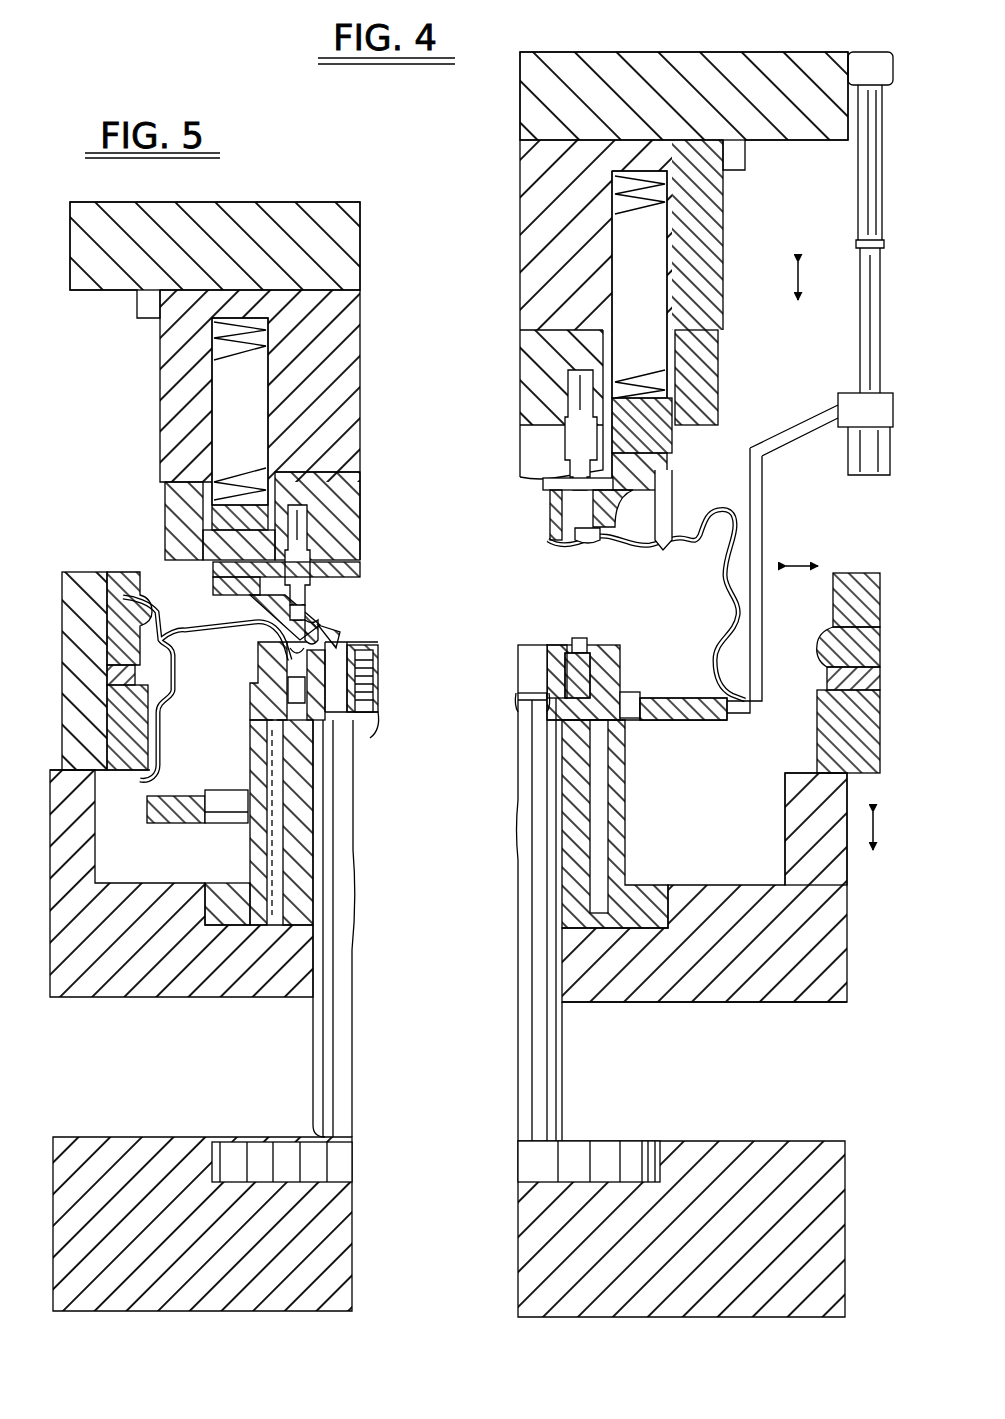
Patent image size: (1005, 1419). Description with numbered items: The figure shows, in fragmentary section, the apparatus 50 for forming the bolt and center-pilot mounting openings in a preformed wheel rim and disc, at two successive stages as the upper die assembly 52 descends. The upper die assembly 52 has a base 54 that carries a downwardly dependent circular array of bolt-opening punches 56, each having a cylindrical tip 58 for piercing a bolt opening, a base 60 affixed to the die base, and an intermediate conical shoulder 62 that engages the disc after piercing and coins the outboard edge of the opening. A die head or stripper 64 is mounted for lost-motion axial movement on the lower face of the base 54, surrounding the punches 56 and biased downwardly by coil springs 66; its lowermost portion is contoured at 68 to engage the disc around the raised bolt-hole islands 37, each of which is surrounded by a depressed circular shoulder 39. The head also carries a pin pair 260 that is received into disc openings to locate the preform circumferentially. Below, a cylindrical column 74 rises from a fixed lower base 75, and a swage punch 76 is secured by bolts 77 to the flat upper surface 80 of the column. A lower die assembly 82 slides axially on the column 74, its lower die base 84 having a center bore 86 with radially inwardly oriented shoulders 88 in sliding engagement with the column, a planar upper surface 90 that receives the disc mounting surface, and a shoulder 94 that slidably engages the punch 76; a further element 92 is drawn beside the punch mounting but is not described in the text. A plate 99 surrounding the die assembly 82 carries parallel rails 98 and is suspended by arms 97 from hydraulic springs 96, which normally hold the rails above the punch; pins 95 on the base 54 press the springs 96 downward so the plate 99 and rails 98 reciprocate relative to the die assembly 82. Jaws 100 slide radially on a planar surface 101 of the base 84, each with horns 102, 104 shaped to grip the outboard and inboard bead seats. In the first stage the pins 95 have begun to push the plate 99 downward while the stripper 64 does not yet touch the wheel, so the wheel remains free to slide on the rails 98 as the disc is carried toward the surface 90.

In FIG. 4, the raised bolt-hole island 37 is at (550, 536).
In FIG. 5, the raised bolt-hole island 37 is at (330, 630).
In FIG. 4, the depressed circular shoulder 39 is at (590, 545).
In FIG. 5, the depressed circular shoulder 39 is at (275, 660).
In FIG. 4, the apparatus 50 is at (512, 158).
In FIG. 5, the apparatus 50 is at (125, 378).
In FIG. 4, the upper die assembly 52 is at (788, 51).
In FIG. 5, the upper die assembly 52 is at (220, 200).
In FIG. 4, the base 54 is at (710, 58).
In FIG. 5, the base 54 is at (322, 204).
In FIG. 4, the bolt-opening punch 56 is at (560, 440).
In FIG. 4, the cylindrical tip 58 is at (556, 504).
In FIG. 5, the cylindrical tip 58 is at (288, 612).
In FIG. 4, the punch base 60 is at (520, 352).
In FIG. 4, the intermediate conical shoulder 62 is at (548, 470).
In FIG. 5, the die head or stripper 64 is at (210, 573).
In FIG. 4, the coil spring 66 is at (612, 205).
In FIG. 5, the contoured lowermost portion 68 is at (312, 638).
In FIG. 4, the cylindrical column 74 is at (516, 986).
In FIG. 5, the cylindrical column 74 is at (313, 1063).
In FIG. 4, the fixed lower base 75 is at (755, 1141).
In FIG. 5, the fixed lower base 75 is at (175, 1141).
In FIG. 4, the swage punch 76 is at (536, 645).
In FIG. 5, the bolt 77 is at (372, 674).
In FIG. 4, the flat upper surface 80 is at (518, 702).
In FIG. 5, the flat upper surface 80 is at (383, 693).
In FIG. 4, the lower die assembly 82 is at (745, 1003).
In FIG. 4, the lower die base 84 is at (642, 1003).
In FIG. 5, the lower die base 84 is at (165, 1000).
In FIG. 4, the center bore 86 is at (560, 866).
In FIG. 5, the center bore 86 is at (310, 875).
In FIG. 4, the radially inwardly oriented shoulder 88 is at (565, 823).
In FIG. 5, the radially inwardly oriented shoulder 88 is at (310, 820).
In FIG. 4, the planar upper surface 90 is at (600, 648).
In FIG. 5, the planar upper surface 90 is at (262, 645).
In FIG. 4, the set screw 92 is at (585, 638).
In FIG. 5, the set screw 92 is at (374, 647).
In FIG. 4, the shoulder 94 is at (548, 661).
In FIG. 4, the pin 95 is at (858, 180).
In FIG. 4, the hydraulic spring 96 is at (845, 393).
In FIG. 4, the arm 97 is at (797, 428).
In FIG. 4, the rail 98 is at (640, 694).
In FIG. 4, the plate 99 is at (700, 696).
In FIG. 5, the plate 99 is at (170, 796).
In FIG. 4, the jaw 100 is at (862, 572).
In FIG. 5, the jaw 100 is at (82, 570).
In FIG. 4, the planar surface 101 is at (790, 774).
In FIG. 5, the planar surface 101 is at (55, 766).
In FIG. 4, the horn 102 is at (820, 628).
In FIG. 5, the horn 102 is at (118, 572).
In FIG. 4, the horn 104 is at (815, 762).
In FIG. 5, the horn 104 is at (133, 780).
In FIG. 4, the pin pair 260 is at (658, 550).